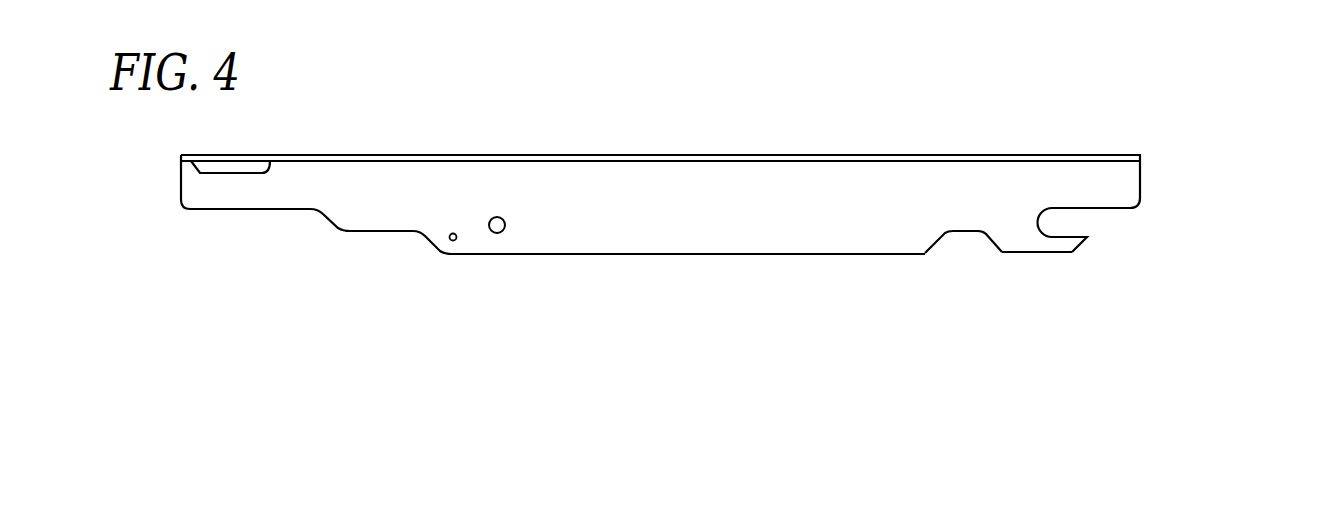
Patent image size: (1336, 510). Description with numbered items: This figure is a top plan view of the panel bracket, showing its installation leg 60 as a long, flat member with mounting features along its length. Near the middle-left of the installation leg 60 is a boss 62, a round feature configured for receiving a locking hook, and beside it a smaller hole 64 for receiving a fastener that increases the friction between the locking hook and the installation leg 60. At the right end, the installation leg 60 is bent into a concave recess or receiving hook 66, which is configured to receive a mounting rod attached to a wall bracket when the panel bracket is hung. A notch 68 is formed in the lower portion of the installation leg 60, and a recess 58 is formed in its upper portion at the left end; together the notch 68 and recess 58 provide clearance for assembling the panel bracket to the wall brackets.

The recess 58 is at (250, 210).
The installation leg 60 is at (713, 228).
The boss 62 is at (503, 232).
The hole 64 is at (449, 238).
The receiving hook 66 is at (1070, 223).
The notch 68 is at (963, 243).